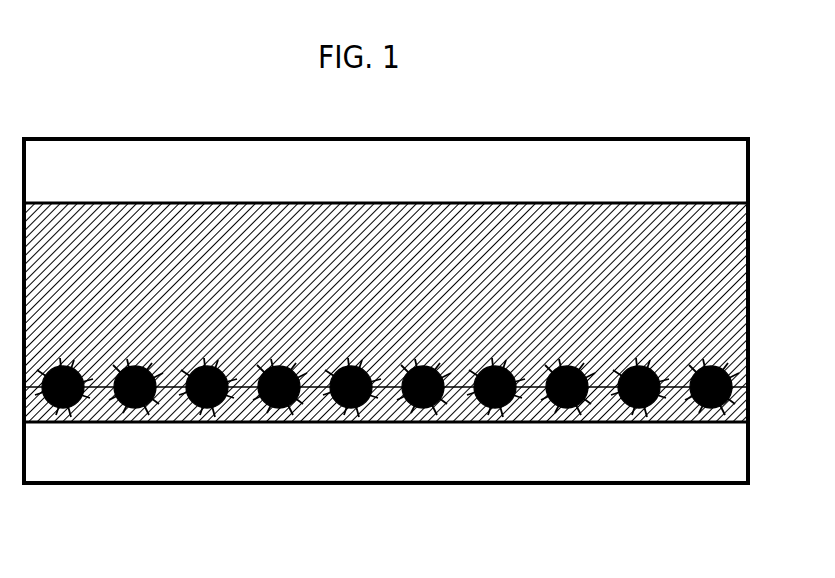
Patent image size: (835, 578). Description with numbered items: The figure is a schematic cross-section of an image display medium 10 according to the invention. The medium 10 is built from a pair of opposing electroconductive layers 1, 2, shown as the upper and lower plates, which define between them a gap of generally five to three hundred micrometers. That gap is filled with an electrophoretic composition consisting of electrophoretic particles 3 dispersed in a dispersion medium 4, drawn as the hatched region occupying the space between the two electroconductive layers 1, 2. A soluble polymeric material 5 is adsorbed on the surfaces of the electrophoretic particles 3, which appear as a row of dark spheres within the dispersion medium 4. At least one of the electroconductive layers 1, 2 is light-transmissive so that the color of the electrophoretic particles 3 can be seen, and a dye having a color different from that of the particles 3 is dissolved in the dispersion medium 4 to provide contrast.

The image display medium 10 is at (622, 517).
The electroconductive layer 1 is at (733, 455).
The electroconductive layer 2 is at (720, 173).
The electrophoretic particles 3 is at (748, 397).
The dispersion medium 4 is at (728, 238).
The soluble polymeric material 5 is at (748, 338).